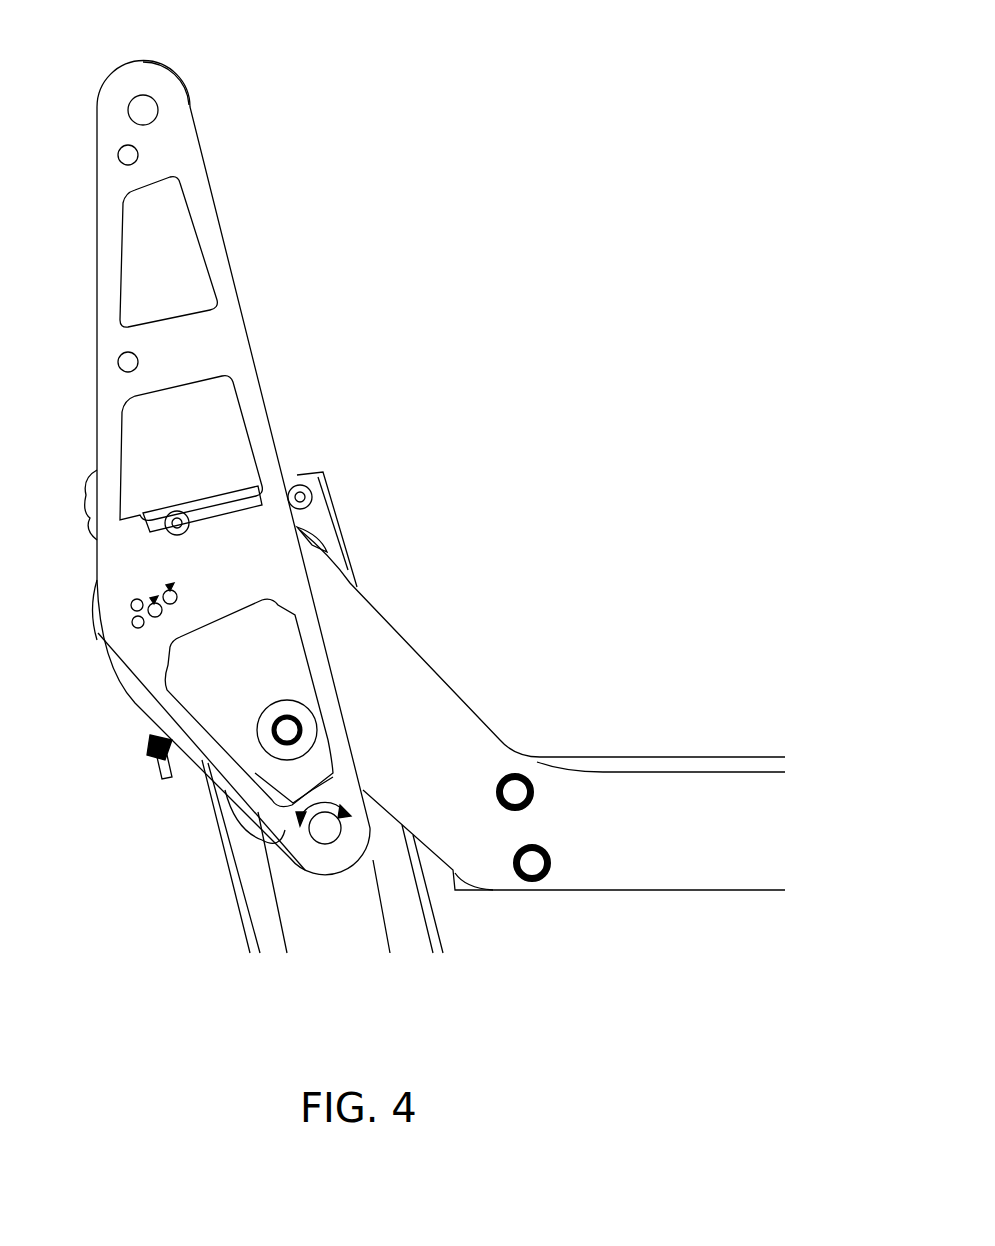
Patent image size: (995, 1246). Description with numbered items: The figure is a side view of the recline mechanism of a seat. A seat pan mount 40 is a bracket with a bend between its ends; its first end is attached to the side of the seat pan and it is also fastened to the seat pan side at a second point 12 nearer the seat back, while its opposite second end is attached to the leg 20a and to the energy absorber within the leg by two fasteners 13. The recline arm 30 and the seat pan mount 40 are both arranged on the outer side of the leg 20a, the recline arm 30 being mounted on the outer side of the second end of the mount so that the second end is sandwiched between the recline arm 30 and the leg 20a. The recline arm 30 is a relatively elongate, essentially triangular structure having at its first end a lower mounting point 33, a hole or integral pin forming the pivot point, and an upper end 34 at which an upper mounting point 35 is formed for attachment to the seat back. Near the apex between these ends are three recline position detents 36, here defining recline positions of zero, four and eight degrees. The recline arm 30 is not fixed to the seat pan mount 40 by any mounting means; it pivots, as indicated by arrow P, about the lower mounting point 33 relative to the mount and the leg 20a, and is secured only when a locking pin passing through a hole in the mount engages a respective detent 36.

The second point 12 is at (532, 863).
The fasteners 13 is at (290, 727).
The leg 20a is at (233, 888).
The recline arm 30 is at (212, 335).
The lower mounting point 33 is at (325, 830).
The upper end 34 is at (175, 75).
The upper mounting point 35 is at (145, 109).
The recline position detents 36 is at (140, 622).
The seat pan mount 40 is at (423, 727).